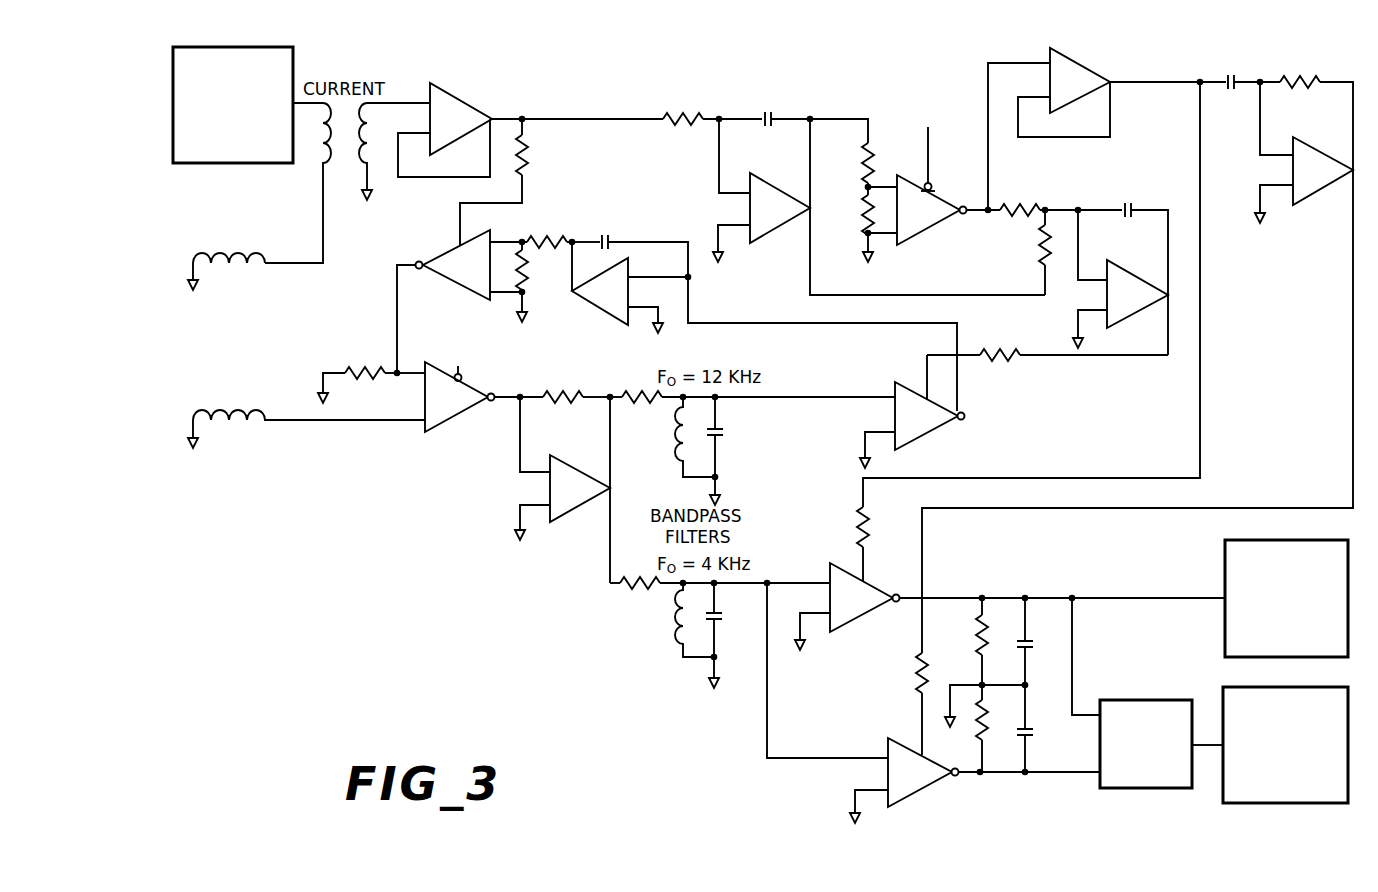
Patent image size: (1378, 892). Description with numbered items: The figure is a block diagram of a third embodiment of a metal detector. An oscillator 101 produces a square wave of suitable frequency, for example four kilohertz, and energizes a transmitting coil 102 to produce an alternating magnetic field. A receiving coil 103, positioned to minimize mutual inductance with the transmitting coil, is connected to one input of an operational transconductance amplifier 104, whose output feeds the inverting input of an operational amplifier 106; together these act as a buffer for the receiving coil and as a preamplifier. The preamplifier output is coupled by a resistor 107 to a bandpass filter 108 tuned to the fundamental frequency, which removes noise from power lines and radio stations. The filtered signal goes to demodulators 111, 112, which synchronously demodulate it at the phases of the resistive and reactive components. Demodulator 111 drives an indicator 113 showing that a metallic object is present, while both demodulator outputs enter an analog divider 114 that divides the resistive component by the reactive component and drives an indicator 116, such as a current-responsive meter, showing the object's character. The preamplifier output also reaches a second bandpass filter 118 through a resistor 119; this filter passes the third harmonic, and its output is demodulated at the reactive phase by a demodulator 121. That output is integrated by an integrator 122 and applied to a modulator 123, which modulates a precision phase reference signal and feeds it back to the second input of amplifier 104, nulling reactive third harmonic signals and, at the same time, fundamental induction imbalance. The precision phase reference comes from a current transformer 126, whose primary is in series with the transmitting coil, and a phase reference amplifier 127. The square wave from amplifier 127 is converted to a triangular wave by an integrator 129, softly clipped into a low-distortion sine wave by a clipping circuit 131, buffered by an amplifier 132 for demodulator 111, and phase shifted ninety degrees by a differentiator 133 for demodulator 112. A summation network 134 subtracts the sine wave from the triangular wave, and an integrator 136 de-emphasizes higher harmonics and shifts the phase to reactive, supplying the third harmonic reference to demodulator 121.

The oscillator 101 is at (257, 164).
The transmitting coil 102 is at (260, 267).
The receiving coil 103 is at (260, 423).
The operational transconductance amplifier 104 is at (472, 383).
The operational amplifier 106 is at (571, 459).
The resistor 107 is at (633, 587).
The bandpass filter 108 is at (660, 631).
The demodulator 111 is at (833, 568).
The demodulator 112 is at (885, 742).
The indicator 113 is at (1225, 568).
The analog divider 114 is at (1095, 783).
The indicator 116 is at (1303, 687).
The second bandpass filter 118 is at (730, 444).
The resistor 119 is at (647, 401).
The demodulator 121 is at (911, 383).
The integrator 122 is at (588, 299).
The modulator 123 is at (447, 282).
The current transformer 126 is at (378, 118).
The phase reference amplifier 127 is at (464, 98).
The integrator 129 is at (782, 232).
The clipping circuit 131 is at (925, 238).
The amplifier 132 is at (1090, 71).
The differentiator 133 is at (1315, 198).
The summation network 134 is at (1023, 232).
The integrator 136 is at (1137, 272).